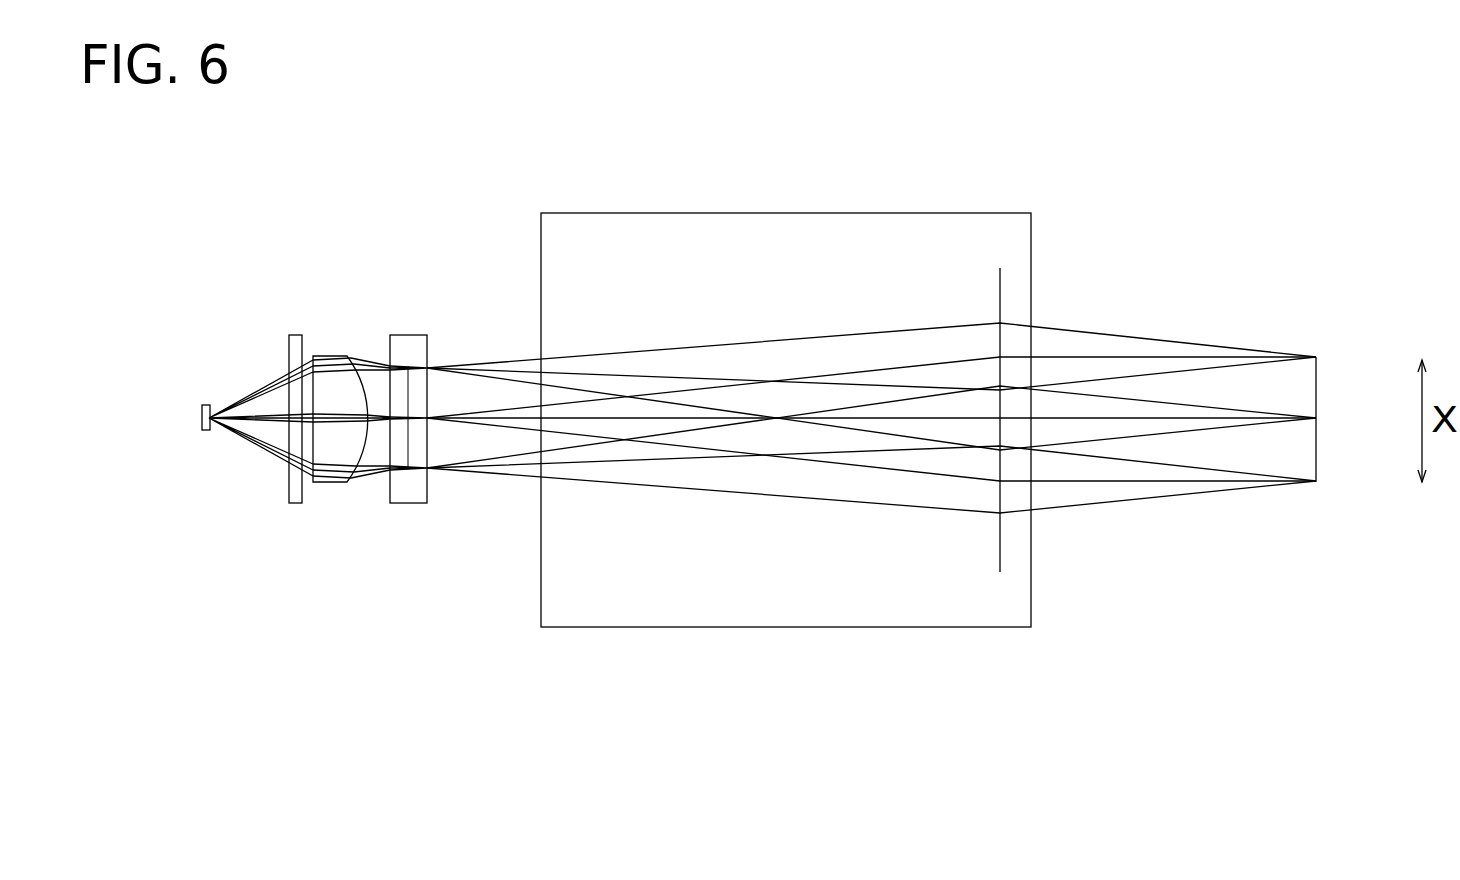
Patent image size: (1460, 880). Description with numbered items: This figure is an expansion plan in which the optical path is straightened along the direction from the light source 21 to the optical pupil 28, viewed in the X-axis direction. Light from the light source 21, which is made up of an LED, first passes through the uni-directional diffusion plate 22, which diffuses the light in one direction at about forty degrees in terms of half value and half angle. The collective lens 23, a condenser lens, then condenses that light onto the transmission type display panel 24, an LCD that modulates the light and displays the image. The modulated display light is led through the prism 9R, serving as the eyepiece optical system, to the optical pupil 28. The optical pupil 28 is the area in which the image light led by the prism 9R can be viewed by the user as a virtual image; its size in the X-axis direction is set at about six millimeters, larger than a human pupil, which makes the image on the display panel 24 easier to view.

The light source 21 is at (203, 416).
The uni-directional diffusion plate 22 is at (289, 492).
The collective lens 23 is at (328, 484).
The display panel 24 is at (402, 504).
The prism 9R is at (769, 212).
The optical pupil 28 is at (1318, 448).